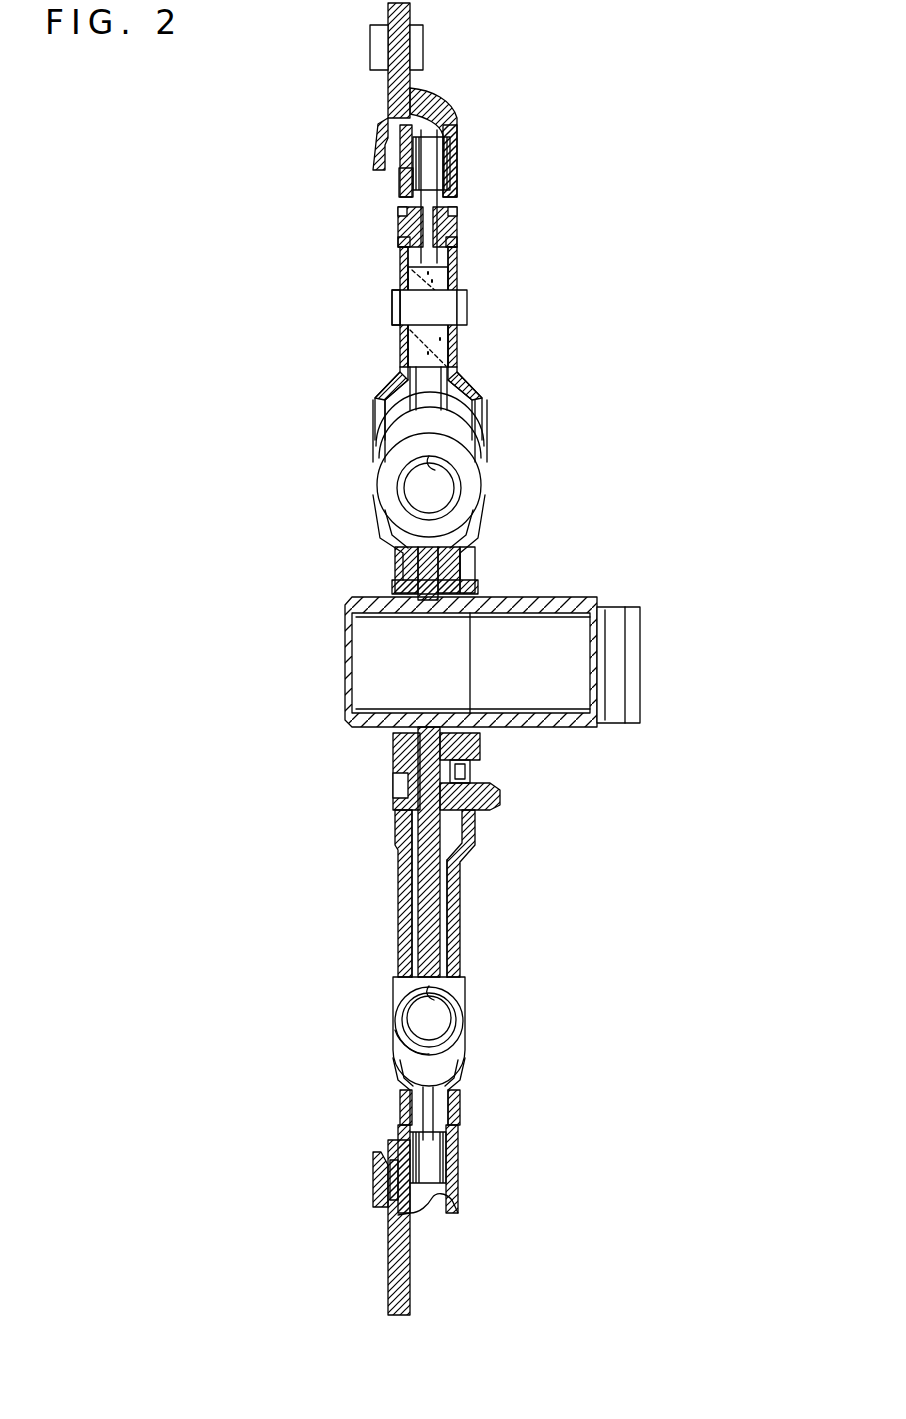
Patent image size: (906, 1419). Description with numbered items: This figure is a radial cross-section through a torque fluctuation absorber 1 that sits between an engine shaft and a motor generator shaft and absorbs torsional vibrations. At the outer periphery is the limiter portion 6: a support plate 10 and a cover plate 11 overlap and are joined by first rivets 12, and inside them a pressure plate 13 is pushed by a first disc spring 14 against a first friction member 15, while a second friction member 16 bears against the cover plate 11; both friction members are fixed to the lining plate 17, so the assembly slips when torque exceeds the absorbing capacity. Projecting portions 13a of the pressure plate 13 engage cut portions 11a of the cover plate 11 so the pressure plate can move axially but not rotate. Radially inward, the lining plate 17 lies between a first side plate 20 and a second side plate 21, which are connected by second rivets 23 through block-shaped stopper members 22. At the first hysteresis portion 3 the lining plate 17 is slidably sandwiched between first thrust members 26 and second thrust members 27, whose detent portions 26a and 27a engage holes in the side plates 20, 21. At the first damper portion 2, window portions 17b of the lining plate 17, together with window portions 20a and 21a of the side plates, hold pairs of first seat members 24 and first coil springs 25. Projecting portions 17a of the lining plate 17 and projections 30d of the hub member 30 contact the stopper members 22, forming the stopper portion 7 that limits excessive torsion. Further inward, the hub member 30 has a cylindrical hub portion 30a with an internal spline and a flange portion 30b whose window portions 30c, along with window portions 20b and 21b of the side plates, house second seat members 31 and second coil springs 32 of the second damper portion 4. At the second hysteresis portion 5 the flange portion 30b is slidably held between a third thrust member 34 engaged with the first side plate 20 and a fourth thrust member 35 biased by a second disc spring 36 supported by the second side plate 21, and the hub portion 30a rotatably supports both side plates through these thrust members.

The torque fluctuation absorber 1 is at (770, 143).
The first damper portion 2 is at (478, 1025).
The first hysteresis portion 3 is at (480, 232).
The second damper portion 4 is at (508, 478).
The second hysteresis portion 5 is at (508, 570).
The limiter portion 6 is at (475, 158).
The stopper portion 7 is at (485, 316).
The support plate 10 is at (390, 88).
The cover plate 11 is at (433, 112).
The cut portions 11a is at (422, 1217).
The first rivets 12 is at (400, 48).
The pressure plate 13 is at (400, 188).
The projecting portions 13a is at (412, 1255).
The first disc spring 14 is at (385, 135).
The first friction member 15 is at (405, 176).
The second friction member 16 is at (448, 158).
The lining plate 17 is at (432, 174).
The projecting portions 17a is at (394, 300).
The window portions 17b is at (413, 1100).
The first side plate 20 is at (408, 363).
The window portions 20a is at (397, 1070).
The window portions 20b is at (380, 417).
The second side plate 21 is at (457, 368).
The window portions 21a is at (465, 1072).
The window portions 21b is at (476, 417).
The stopper members 22 is at (403, 343).
The second rivets 23 is at (460, 305).
The first seat members 24 is at (462, 988).
The first coil springs 25 is at (398, 1018).
The first thrust members 26 is at (400, 217).
The detent portions 26a is at (407, 243).
The second thrust members 27 is at (457, 215).
The detent portions 27a is at (457, 243).
The hub member 30 is at (345, 658).
The hub portion 30a is at (370, 606).
The flange portion 30b is at (427, 878).
The window portions 30c is at (392, 393).
The projections 30d is at (445, 347).
The second seat members 31 is at (383, 450).
The second coil springs 32 is at (473, 488).
The third thrust member 34 is at (394, 740).
The fourth thrust member 35 is at (478, 740).
The second disc spring 36 is at (468, 770).